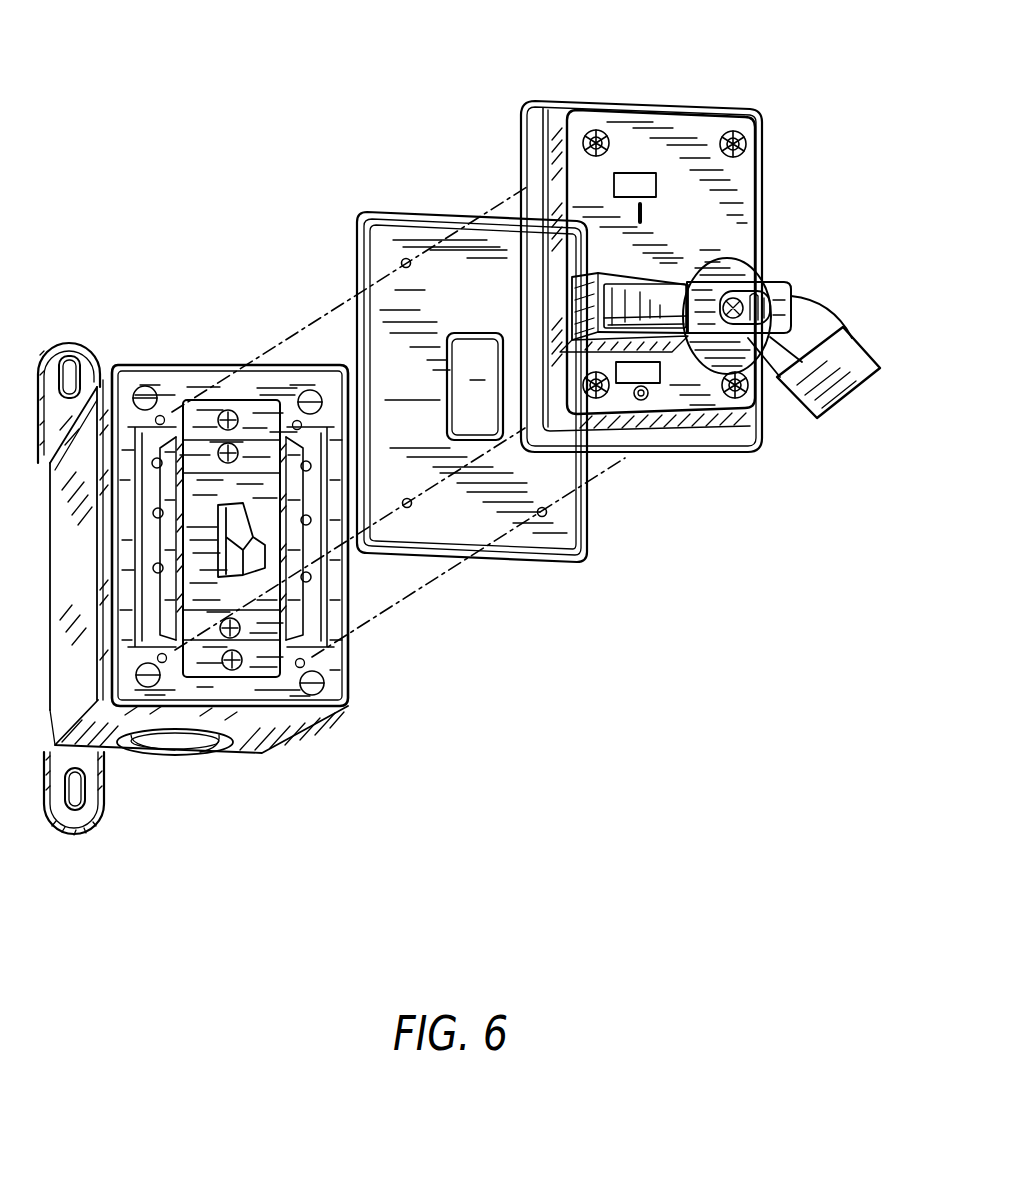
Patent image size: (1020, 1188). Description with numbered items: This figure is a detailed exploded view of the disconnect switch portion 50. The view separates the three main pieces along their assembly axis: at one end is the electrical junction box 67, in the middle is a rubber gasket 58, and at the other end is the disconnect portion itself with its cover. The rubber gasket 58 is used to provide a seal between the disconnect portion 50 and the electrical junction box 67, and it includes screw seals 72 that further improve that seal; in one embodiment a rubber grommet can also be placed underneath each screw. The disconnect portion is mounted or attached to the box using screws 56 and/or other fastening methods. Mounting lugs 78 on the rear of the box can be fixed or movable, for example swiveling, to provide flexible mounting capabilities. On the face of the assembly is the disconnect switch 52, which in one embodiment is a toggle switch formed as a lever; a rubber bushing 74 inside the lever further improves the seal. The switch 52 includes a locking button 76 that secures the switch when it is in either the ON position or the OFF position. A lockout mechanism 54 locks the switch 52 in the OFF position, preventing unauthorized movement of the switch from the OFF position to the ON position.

The disconnect switch portion 50 is at (435, 43).
The disconnect switch 52 is at (762, 278).
The lockout mechanism 54 is at (848, 350).
The screws 56 is at (748, 145).
The rubber gasket 58 is at (412, 210).
The electrical junction box 67 is at (283, 740).
The screw seals 72 is at (402, 263).
The rubber bushing 74 is at (683, 270).
The locking button 76 is at (617, 283).
The mounting lugs 78 is at (88, 348).